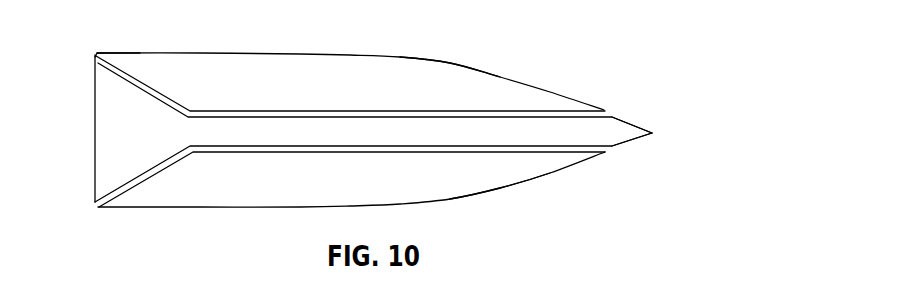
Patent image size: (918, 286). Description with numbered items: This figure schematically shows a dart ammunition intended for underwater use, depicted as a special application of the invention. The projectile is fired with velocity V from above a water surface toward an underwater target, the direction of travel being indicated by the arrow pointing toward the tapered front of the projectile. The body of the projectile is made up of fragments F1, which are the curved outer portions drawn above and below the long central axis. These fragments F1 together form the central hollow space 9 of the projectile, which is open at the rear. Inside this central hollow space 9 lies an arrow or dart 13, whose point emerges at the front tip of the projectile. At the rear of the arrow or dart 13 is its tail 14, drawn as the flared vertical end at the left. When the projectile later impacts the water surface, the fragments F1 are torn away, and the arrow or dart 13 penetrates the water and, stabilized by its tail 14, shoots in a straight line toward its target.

The central hollow space 9 is at (94, 55).
The tail 14 is at (93, 133).
The fragments F1 is at (418, 73).
The arrow or dart 13 is at (622, 137).
The velocity V is at (700, 135).